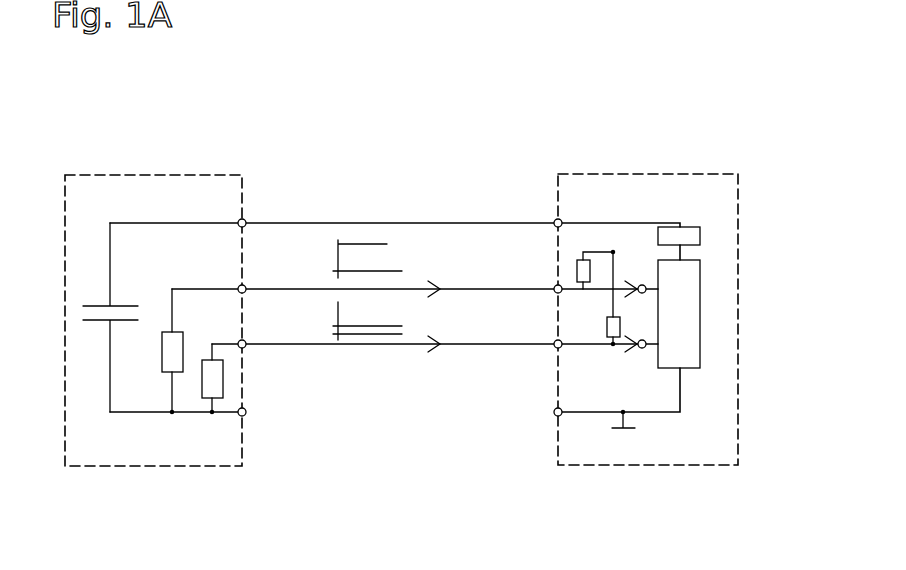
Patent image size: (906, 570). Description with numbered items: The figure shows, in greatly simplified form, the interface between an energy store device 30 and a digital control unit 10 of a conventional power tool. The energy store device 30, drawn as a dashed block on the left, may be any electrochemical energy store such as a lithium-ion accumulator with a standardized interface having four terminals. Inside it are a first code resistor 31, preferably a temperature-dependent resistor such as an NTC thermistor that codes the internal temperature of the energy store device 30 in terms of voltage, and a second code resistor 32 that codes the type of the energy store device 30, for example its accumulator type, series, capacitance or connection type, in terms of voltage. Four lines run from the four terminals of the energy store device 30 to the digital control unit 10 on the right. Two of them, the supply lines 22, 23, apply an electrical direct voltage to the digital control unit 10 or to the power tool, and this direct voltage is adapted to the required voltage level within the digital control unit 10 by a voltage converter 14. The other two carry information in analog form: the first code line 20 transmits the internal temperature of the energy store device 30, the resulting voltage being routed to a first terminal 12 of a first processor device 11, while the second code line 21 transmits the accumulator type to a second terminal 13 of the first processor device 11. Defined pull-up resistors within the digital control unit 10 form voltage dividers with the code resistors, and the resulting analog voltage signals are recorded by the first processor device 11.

The digital control unit 10 is at (643, 467).
The first processor device 11 is at (700, 350).
The first terminal 12 is at (642, 285).
The second terminal 13 is at (642, 348).
The voltage converter 14 is at (700, 236).
The first code line 20 is at (283, 288).
The second code line 21 is at (282, 348).
The supply line 22 is at (283, 222).
The supply line 23 is at (283, 416).
The energy store device 30 is at (153, 467).
The first code resistor 31 is at (162, 360).
The second code resistor 32 is at (202, 400).